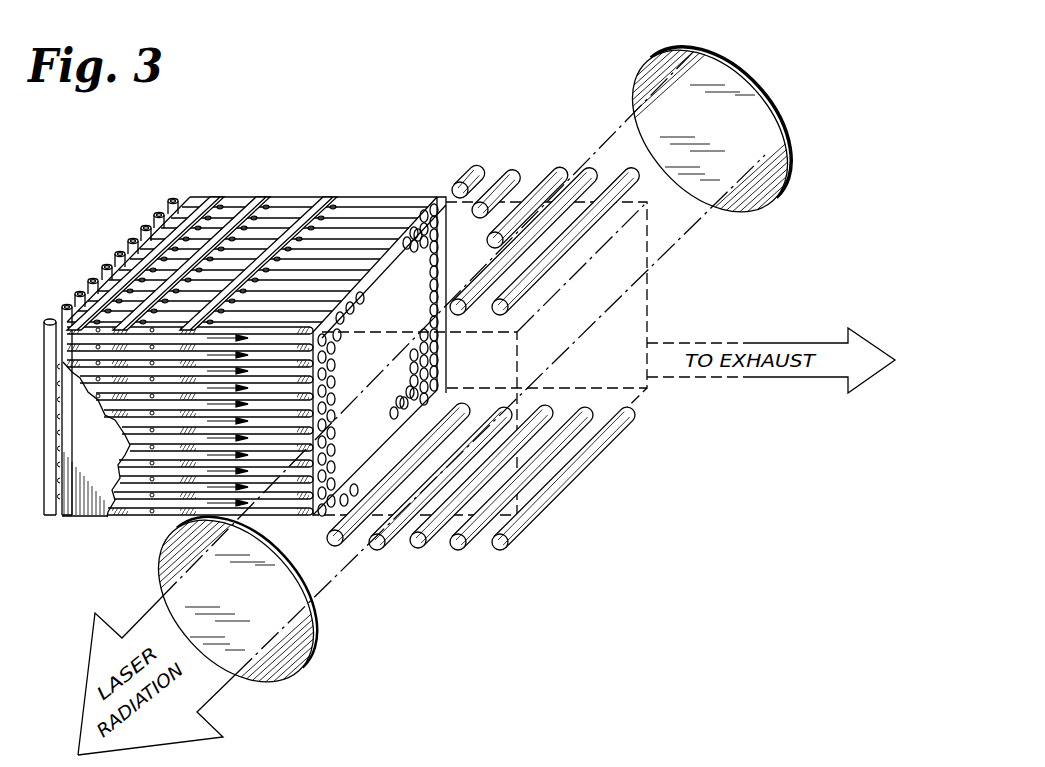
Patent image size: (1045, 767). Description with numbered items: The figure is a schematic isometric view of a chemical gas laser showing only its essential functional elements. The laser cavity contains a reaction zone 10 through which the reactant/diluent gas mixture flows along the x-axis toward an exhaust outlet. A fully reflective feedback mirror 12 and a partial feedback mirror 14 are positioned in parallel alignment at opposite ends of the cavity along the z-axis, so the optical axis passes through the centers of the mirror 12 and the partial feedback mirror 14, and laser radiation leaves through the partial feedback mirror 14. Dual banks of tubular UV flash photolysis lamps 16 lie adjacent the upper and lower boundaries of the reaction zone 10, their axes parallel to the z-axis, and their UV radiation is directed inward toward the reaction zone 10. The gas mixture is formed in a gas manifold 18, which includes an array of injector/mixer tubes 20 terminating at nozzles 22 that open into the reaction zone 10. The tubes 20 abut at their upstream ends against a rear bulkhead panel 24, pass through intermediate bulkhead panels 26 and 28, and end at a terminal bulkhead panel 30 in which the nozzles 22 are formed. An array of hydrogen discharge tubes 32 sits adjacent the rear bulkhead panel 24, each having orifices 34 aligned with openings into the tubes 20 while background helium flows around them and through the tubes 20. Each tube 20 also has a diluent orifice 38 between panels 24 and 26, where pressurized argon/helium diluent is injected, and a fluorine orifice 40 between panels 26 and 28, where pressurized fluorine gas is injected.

The reaction zone 10 is at (653, 289).
The 100% feedback mirror 12 is at (748, 70).
The partial feedback mirror 14 is at (317, 638).
The tubular UV flash photolysis lamps 16 is at (525, 166).
The gas manifold 18 is at (233, 319).
The injector/mixer tubes 20 is at (376, 196).
The nozzles 22 is at (384, 333).
The rear bulkhead panel 24 is at (216, 205).
The intermediate bulkhead panel 26 is at (263, 196).
The intermediate bulkhead panel 28 is at (325, 197).
The terminal bulkhead panel 30 is at (386, 344).
The hydrogen discharge tubes 32 is at (48, 357).
The orifices 34 is at (50, 488).
The diluent orifice 38 is at (222, 205).
The fluorine orifice 40 is at (272, 205).